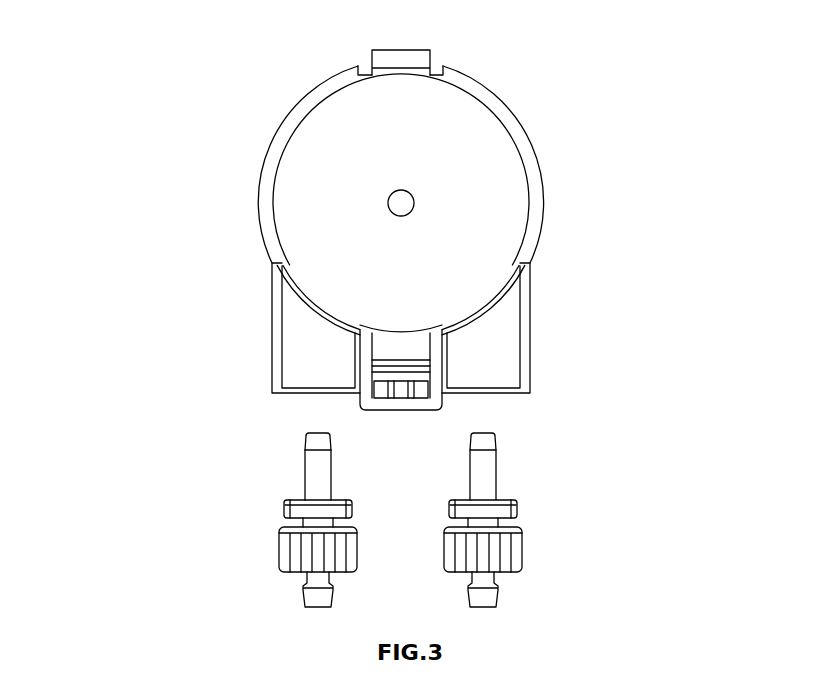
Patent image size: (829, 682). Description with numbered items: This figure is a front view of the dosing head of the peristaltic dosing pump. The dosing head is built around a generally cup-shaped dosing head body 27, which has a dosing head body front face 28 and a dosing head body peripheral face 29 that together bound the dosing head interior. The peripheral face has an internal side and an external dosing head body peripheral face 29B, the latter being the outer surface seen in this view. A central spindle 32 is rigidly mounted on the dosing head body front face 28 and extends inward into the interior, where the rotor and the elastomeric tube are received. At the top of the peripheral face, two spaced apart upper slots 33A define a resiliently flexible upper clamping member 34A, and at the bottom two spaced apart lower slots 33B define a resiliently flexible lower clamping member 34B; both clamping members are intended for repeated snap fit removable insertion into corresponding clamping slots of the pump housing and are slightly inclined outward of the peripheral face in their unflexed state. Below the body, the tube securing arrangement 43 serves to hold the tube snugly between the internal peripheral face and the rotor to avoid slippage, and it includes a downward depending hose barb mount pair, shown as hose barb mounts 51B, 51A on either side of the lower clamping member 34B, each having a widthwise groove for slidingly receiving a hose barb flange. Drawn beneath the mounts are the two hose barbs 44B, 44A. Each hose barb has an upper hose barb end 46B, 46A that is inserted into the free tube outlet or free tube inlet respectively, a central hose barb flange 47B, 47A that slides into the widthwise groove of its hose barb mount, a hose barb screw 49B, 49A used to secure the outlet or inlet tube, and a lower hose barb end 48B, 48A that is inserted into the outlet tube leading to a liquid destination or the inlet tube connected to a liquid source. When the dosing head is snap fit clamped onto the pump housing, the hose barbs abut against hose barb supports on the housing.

The dosing head body 27 is at (540, 78).
The dosing head body front face 28 is at (325, 182).
The dosing head body peripheral face 29 is at (529, 203).
The external dosing head body peripheral face 29B is at (259, 244).
The central spindle 32 is at (403, 206).
The upper slots 33A is at (356, 64).
The upper clamping member 34A is at (398, 50).
The tube securing arrangement 43 is at (683, 314).
The hose barb mount 51B is at (308, 358).
The hose barb mount 51A is at (494, 362).
The lower slots 33B is at (357, 398).
The lower clamping member 34B is at (400, 413).
The hose barb 44B is at (198, 544).
The hose barb 44A is at (601, 544).
The upper hose barb end 46B is at (305, 468).
The upper hose barb end 46A is at (497, 473).
The central hose barb flange 47B is at (303, 510).
The central hose barb flange 47A is at (503, 508).
The hose barb screw 49B is at (280, 547).
The hose barb screw 49A is at (522, 548).
The lower hose barb end 48B is at (312, 598).
The lower hose barb end 48A is at (490, 598).